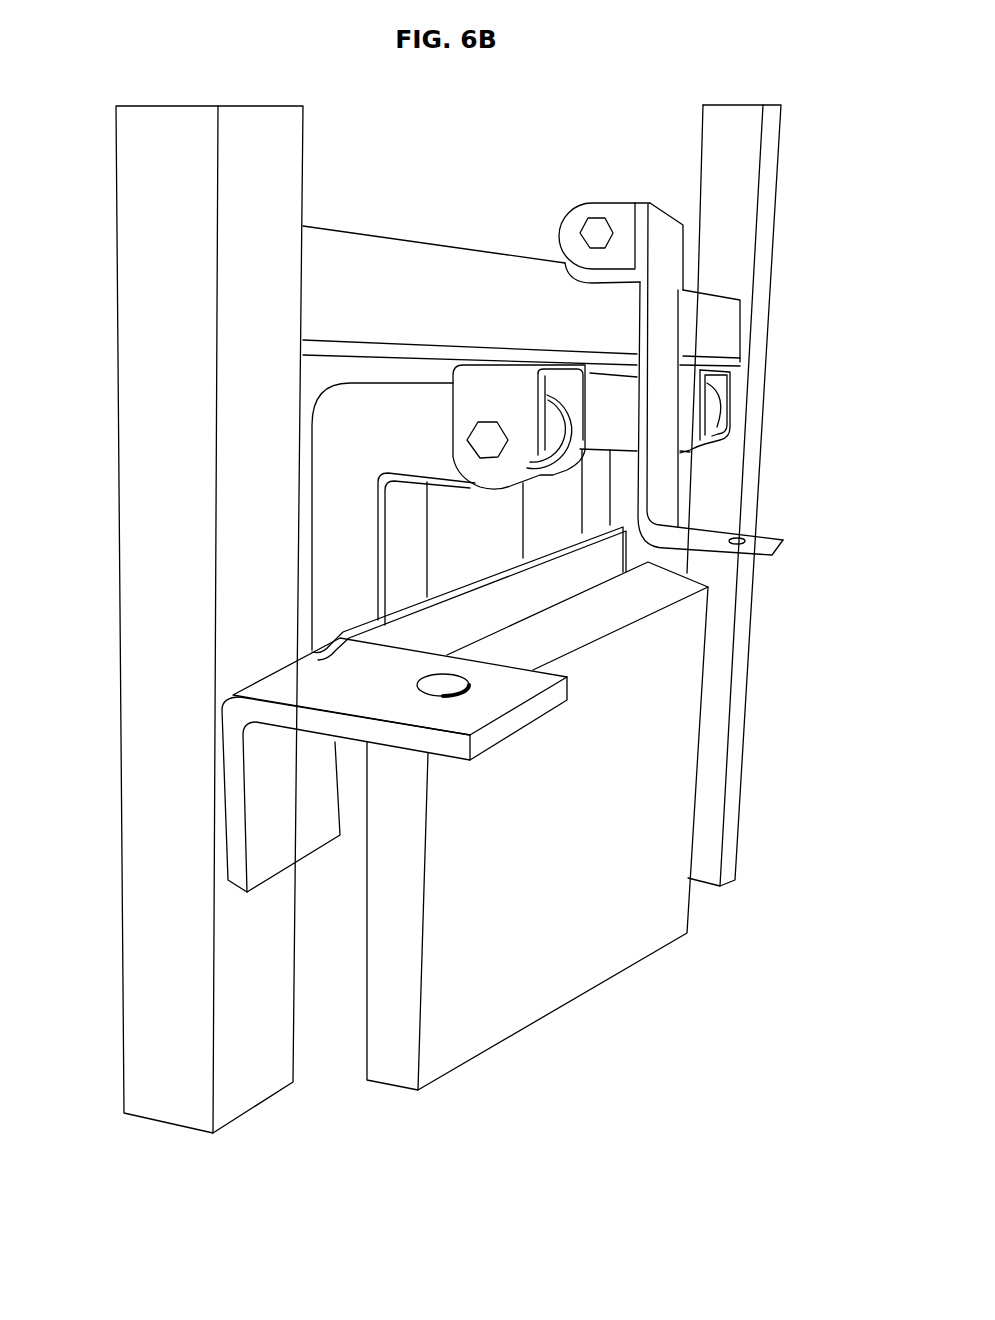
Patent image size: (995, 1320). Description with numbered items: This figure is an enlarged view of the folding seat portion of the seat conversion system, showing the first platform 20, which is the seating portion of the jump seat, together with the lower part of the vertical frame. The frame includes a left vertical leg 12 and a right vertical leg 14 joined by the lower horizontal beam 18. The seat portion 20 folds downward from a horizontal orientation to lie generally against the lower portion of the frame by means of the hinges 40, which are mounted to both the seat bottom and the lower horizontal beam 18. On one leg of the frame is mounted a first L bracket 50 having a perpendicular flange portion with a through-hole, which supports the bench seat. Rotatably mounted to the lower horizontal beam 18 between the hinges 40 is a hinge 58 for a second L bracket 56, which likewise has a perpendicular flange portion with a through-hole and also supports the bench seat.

The left vertical leg 12 is at (160, 380).
The right vertical leg 14 is at (747, 183).
The lower horizontal beam 18 is at (367, 258).
The first platform 20 is at (566, 938).
The hinges for jump seat 40 is at (485, 497).
The first L bracket 50 is at (297, 828).
The second L bracket 56 is at (662, 520).
The hinge for second L bracket 58 is at (590, 232).